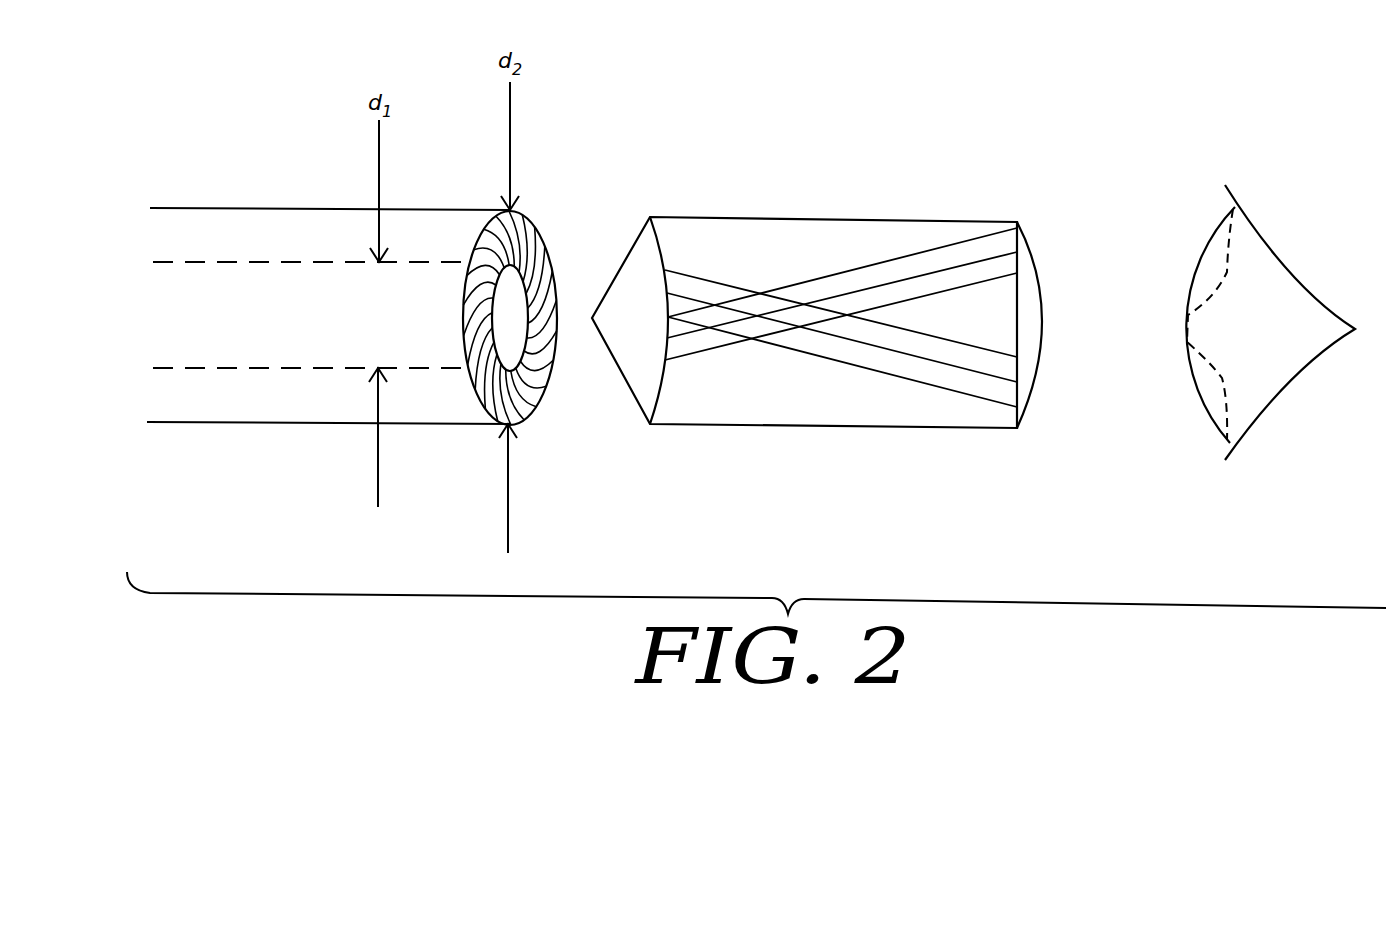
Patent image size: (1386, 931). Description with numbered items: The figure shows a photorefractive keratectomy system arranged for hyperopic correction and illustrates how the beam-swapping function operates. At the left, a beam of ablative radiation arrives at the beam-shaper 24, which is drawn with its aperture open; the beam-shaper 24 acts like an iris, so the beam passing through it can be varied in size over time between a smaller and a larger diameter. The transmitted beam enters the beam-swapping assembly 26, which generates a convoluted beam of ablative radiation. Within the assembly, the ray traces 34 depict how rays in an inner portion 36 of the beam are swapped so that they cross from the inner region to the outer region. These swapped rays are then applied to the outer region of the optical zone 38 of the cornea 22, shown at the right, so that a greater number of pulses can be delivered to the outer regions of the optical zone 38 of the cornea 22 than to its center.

The cornea 22 is at (1265, 375).
The beam-shaper 24 is at (527, 222).
The beam-swapping assembly 26 is at (870, 428).
The light rays 34 is at (670, 317).
The inner portion of the beam 36 is at (707, 352).
The optical zone 38 is at (1217, 263).